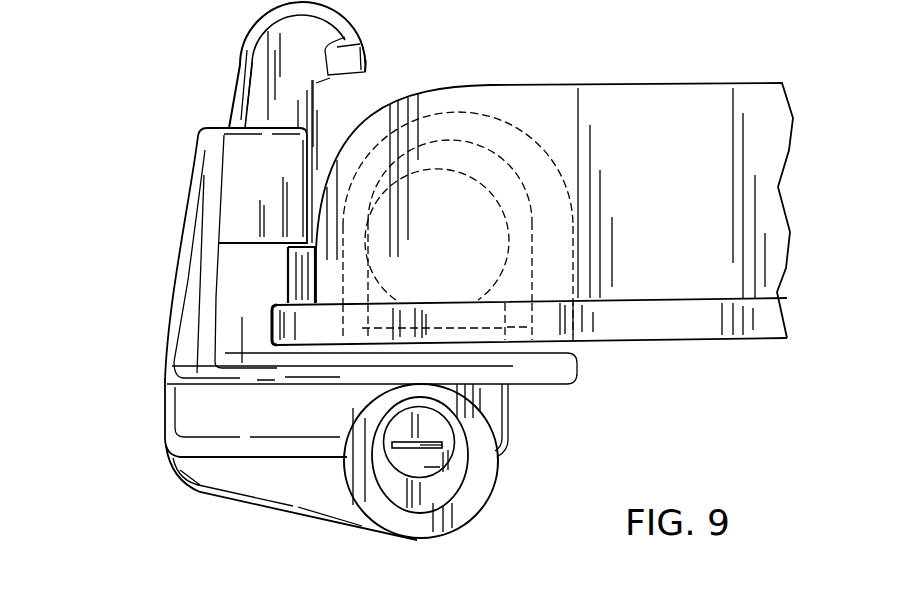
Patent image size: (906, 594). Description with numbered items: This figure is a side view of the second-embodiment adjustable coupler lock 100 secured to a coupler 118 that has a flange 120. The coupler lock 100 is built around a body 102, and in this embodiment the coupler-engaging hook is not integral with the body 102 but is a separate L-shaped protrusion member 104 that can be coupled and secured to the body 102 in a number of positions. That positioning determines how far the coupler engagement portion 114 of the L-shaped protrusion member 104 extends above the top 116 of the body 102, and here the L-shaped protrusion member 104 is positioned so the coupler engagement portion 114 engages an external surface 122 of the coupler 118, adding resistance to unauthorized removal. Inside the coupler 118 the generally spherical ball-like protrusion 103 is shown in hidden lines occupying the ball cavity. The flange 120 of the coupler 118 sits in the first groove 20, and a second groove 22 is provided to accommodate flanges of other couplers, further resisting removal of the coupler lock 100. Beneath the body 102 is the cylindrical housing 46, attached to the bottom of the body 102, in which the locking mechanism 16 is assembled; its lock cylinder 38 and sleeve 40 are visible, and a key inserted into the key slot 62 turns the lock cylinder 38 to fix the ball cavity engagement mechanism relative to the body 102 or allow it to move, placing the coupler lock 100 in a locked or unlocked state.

The adjustable coupler lock 100 is at (146, 71).
The body 102 is at (186, 177).
The L-shaped protrusion member 104 is at (250, 25).
The coupler engagement portion 114 is at (350, 33).
The top of the body 116 is at (215, 128).
The coupler 118 is at (687, 113).
The flange 120 is at (308, 333).
The external surface 122 is at (375, 112).
The ball-like protrusion 103 is at (500, 195).
The locking mechanism 16 is at (407, 547).
The first groove 20 is at (300, 322).
The second groove 22 is at (287, 279).
The lock cylinder 38 is at (427, 467).
The sleeve 40 is at (447, 490).
The cylindrical housing 46 is at (463, 513).
The key slot 62 is at (437, 441).